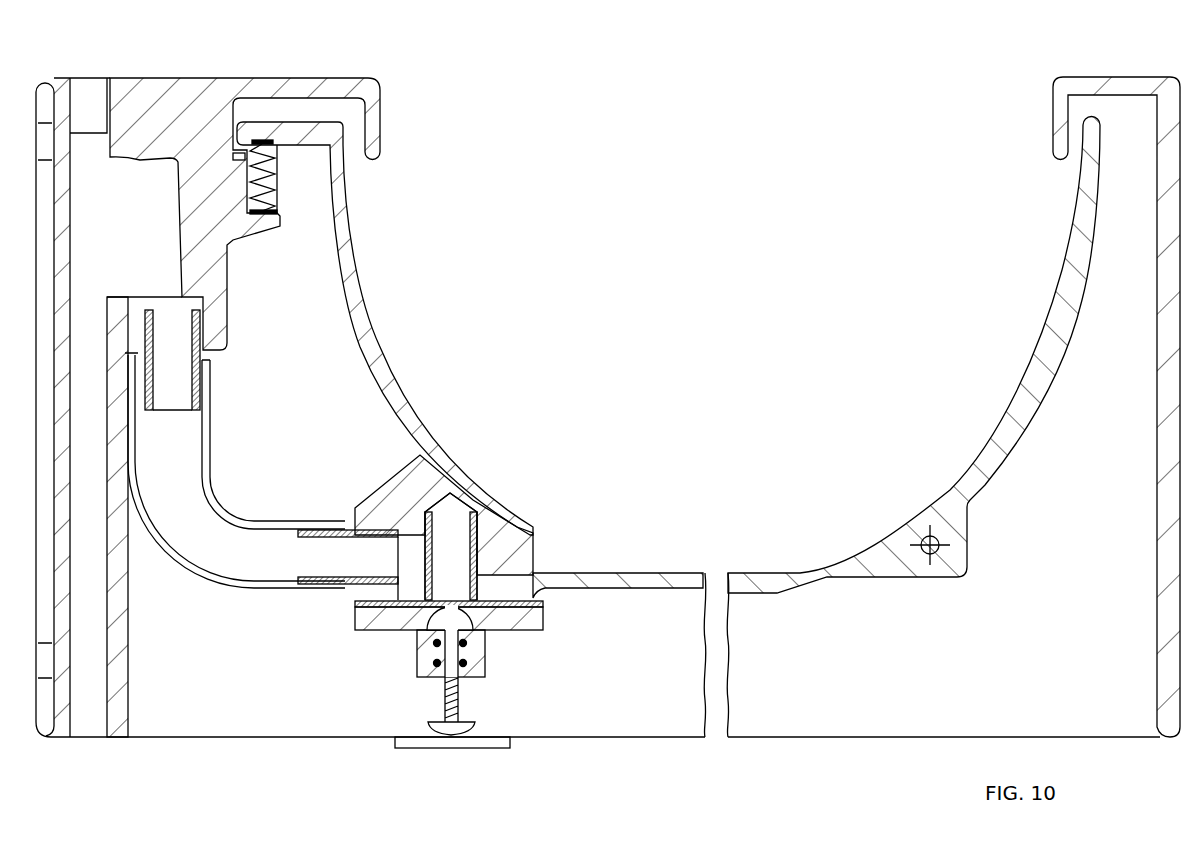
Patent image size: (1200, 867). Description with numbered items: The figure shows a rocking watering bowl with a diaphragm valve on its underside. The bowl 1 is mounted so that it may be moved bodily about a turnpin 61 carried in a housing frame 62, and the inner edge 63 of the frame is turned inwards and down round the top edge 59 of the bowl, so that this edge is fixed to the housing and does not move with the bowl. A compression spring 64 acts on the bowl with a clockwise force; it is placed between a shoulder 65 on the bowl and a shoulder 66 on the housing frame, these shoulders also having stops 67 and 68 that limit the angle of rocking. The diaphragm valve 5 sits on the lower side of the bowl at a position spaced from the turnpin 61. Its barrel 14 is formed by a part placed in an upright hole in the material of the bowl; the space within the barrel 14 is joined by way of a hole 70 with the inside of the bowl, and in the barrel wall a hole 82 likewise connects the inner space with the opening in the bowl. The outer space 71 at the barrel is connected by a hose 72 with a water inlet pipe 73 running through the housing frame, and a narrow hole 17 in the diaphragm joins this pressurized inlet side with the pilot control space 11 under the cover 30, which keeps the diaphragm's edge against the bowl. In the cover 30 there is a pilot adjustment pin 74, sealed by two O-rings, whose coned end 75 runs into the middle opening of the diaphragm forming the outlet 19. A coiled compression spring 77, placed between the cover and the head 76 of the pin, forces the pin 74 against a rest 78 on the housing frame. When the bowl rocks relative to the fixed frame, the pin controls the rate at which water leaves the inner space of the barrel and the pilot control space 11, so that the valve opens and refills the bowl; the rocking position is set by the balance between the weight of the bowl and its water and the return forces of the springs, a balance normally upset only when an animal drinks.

The bowl 1 is at (364, 306).
The diaphragm valve 5 is at (340, 641).
The pilot control space 11 is at (450, 617).
The barrel 14 is at (432, 540).
The narrow hole 17 is at (410, 600).
The outlet 19 is at (448, 605).
The cover 30 is at (377, 630).
The top edge 59 is at (1092, 148).
The turnpin 61 is at (940, 540).
The housing frame 62 is at (1127, 712).
The inner edge 63 is at (376, 143).
The compression spring 64 is at (274, 183).
The shoulder 65 is at (308, 138).
The shoulder 66 is at (249, 229).
The stop 67 is at (239, 139).
The stop 68 is at (233, 157).
The hole 70 is at (535, 541).
The outer space 71 is at (499, 572).
The hose 72 is at (210, 582).
The water inlet pipe 73 is at (128, 272).
The pilot adjustment pin 74 is at (443, 677).
The coned end 75 is at (474, 616).
The head 76 is at (476, 724).
The coiled compression spring 77 is at (460, 695).
The rest 78 is at (457, 748).
The hole 82 is at (471, 557).